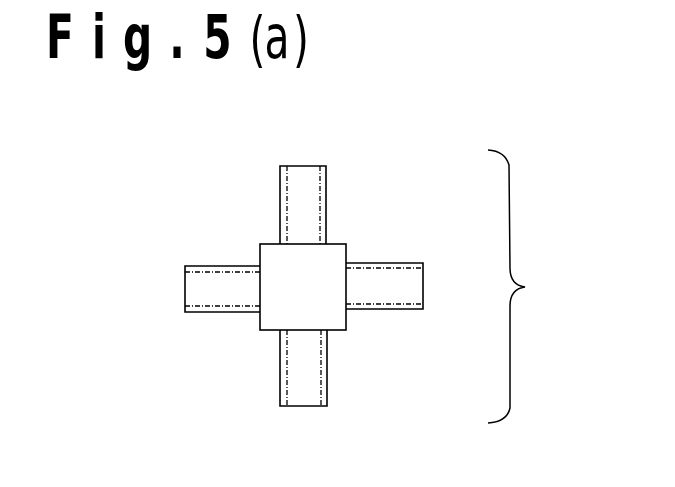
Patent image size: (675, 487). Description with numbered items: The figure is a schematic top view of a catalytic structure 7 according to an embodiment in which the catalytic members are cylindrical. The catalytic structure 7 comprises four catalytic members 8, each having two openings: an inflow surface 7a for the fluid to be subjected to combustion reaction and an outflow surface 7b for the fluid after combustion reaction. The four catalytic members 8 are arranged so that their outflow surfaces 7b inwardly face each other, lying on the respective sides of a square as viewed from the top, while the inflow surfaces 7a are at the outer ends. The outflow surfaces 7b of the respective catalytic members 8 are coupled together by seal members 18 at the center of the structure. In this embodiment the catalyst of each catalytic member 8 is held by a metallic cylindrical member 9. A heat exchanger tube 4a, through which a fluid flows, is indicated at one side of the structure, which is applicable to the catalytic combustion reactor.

The catalytic structure 7 is at (525, 287).
The inflow surface 7a is at (302, 165).
The outflow surface 7b is at (345, 287).
The catalytic member 8 is at (311, 196).
The metallic cylindrical member 9 is at (278, 207).
The seal member 18 is at (259, 328).
The heat exchanger tube 4a is at (184, 291).